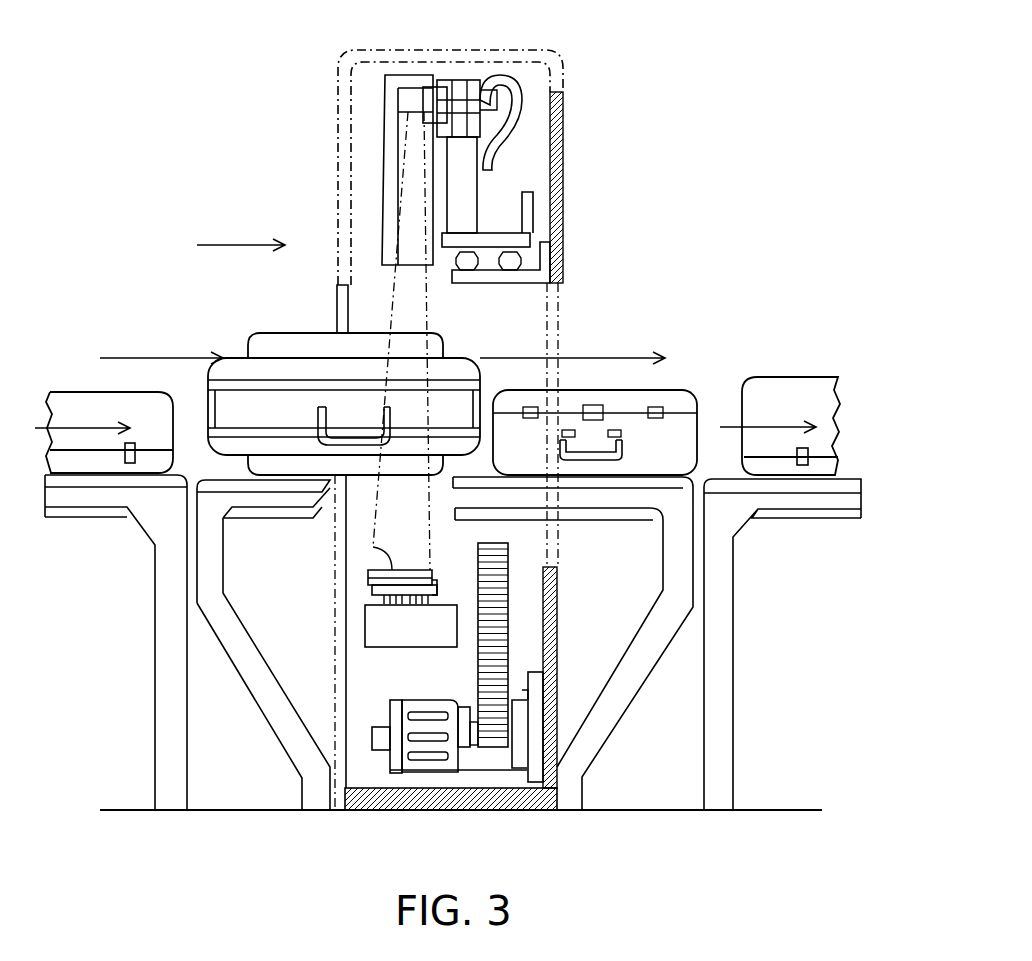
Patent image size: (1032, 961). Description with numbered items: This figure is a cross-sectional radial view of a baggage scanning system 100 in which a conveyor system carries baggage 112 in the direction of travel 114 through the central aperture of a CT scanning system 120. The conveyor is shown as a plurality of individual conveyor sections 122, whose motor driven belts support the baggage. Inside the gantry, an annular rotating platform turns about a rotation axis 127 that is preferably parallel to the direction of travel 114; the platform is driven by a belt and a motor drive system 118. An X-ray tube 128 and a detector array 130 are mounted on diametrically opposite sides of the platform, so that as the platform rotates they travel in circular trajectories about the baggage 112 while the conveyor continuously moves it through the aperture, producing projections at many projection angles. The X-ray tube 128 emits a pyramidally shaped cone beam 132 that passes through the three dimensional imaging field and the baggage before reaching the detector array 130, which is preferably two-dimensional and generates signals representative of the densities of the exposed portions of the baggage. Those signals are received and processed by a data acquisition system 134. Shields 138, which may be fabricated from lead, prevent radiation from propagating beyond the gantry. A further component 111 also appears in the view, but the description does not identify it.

The baggage scanning system 100 is at (722, 863).
The gear rack 111 is at (508, 633).
The baggage 112 is at (300, 332).
The direction of travel 114 is at (242, 232).
The motor drive system 118 is at (452, 772).
The CT scanning system 120 is at (408, 50).
The conveyor sections 122 is at (735, 632).
The rotation axis 127 is at (377, 339).
The X-ray tube 128 is at (452, 93).
The detector array 130 is at (392, 570).
The cone beam 132 is at (428, 320).
The data acquisition system 134 is at (366, 648).
The shields 138 is at (372, 590).